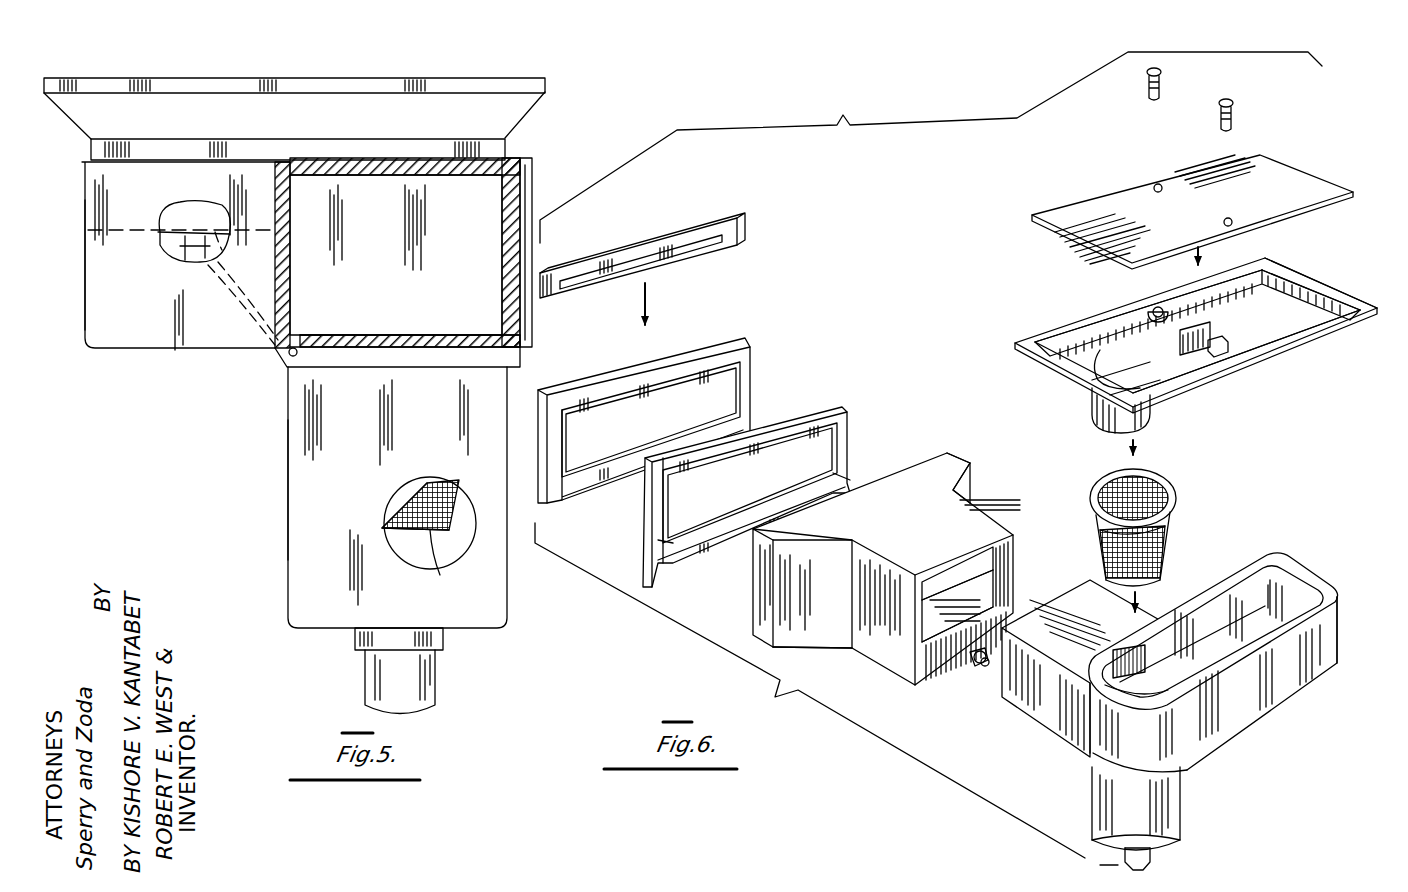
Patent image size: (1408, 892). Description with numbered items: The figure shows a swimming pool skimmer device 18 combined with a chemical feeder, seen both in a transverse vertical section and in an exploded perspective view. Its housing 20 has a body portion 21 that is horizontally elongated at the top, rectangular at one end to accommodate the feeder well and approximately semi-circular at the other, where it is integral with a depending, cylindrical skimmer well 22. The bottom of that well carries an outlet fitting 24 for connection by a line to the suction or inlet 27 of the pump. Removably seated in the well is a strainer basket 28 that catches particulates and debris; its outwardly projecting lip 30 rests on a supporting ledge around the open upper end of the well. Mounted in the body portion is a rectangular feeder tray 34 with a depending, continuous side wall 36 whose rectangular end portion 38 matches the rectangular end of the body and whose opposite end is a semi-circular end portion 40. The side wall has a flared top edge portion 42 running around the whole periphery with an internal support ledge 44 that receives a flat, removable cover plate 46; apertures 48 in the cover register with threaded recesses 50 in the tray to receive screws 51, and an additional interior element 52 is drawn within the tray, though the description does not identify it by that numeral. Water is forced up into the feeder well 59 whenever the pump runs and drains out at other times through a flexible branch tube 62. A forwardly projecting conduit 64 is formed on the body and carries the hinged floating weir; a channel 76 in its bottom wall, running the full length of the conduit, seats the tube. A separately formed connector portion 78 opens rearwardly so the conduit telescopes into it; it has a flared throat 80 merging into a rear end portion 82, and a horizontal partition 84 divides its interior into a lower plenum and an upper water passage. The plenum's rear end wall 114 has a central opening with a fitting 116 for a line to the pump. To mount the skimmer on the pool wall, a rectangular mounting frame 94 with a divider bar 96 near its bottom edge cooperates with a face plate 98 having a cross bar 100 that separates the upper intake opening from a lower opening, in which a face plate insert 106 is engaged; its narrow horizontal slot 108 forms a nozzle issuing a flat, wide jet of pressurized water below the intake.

In FIG. 5, the device 18 is at (284, 462).
In FIG. 5, the housing 20 is at (200, 352).
In FIG. 6, the housing 20 is at (1262, 708).
In FIG. 5, the body portion 21 is at (153, 328).
In FIG. 6, the body portion 21 is at (1313, 670).
In FIG. 5, the skimmer well 22 is at (288, 540).
In FIG. 6, the skimmer well 22 is at (1182, 808).
In FIG. 6, the outlet fitting 24 is at (1152, 852).
In FIG. 5, the suction or inlet 27 is at (437, 675).
In FIG. 5, the basket 28 is at (429, 542).
In FIG. 6, the basket 28 is at (1165, 548).
In FIG. 6, the lip 30 is at (1172, 486).
In FIG. 5, the feeder tray 34 is at (532, 113).
In FIG. 6, the feeder tray 34 is at (1190, 415).
In FIG. 5, the side wall 36 is at (442, 150).
In FIG. 6, the side wall 36 is at (1305, 358).
In FIG. 6, the rectangular end portion 38 is at (1285, 310).
In FIG. 6, the semi-circular end portion 40 is at (1092, 405).
In FIG. 5, the flared top edge portion 42 is at (378, 97).
In FIG. 6, the flared top edge portion 42 is at (1335, 298).
In FIG. 6, the support ledge 44 is at (1072, 328).
In FIG. 6, the cover plate 46 is at (1312, 180).
In FIG. 6, the apertures 48 is at (1158, 184).
In FIG. 6, the threaded recesses 50 is at (1158, 308).
In FIG. 6, the screws 51 is at (1165, 80).
In FIG. 6, the partition 52 is at (1190, 342).
In FIG. 5, the feeder well 59 is at (222, 240).
In FIG. 5, the flexible branch tube 62 is at (165, 245).
In FIG. 5, the conduit 64 is at (405, 350).
In FIG. 6, the conduit 64 is at (1048, 712).
In FIG. 5, the channel 76 is at (296, 348).
In FIG. 6, the channel 76 is at (1125, 700).
In FIG. 6, the connector portion 78 is at (988, 518).
In FIG. 6, the throat 80 is at (960, 480).
In FIG. 6, the rear end portion 82 is at (890, 655).
In FIG. 6, the partition 84 is at (980, 592).
In FIG. 6, the mounting frame 94 is at (838, 404).
In FIG. 6, the divider bar 96 is at (778, 495).
In FIG. 6, the face plate 98 is at (752, 330).
In FIG. 6, the cross bar 100 is at (668, 428).
In FIG. 6, the face plate insert 106 is at (712, 248).
In FIG. 6, the slot 108 is at (668, 243).
In FIG. 6, the end wall 114 is at (937, 665).
In FIG. 6, the fitting 116 is at (982, 672).